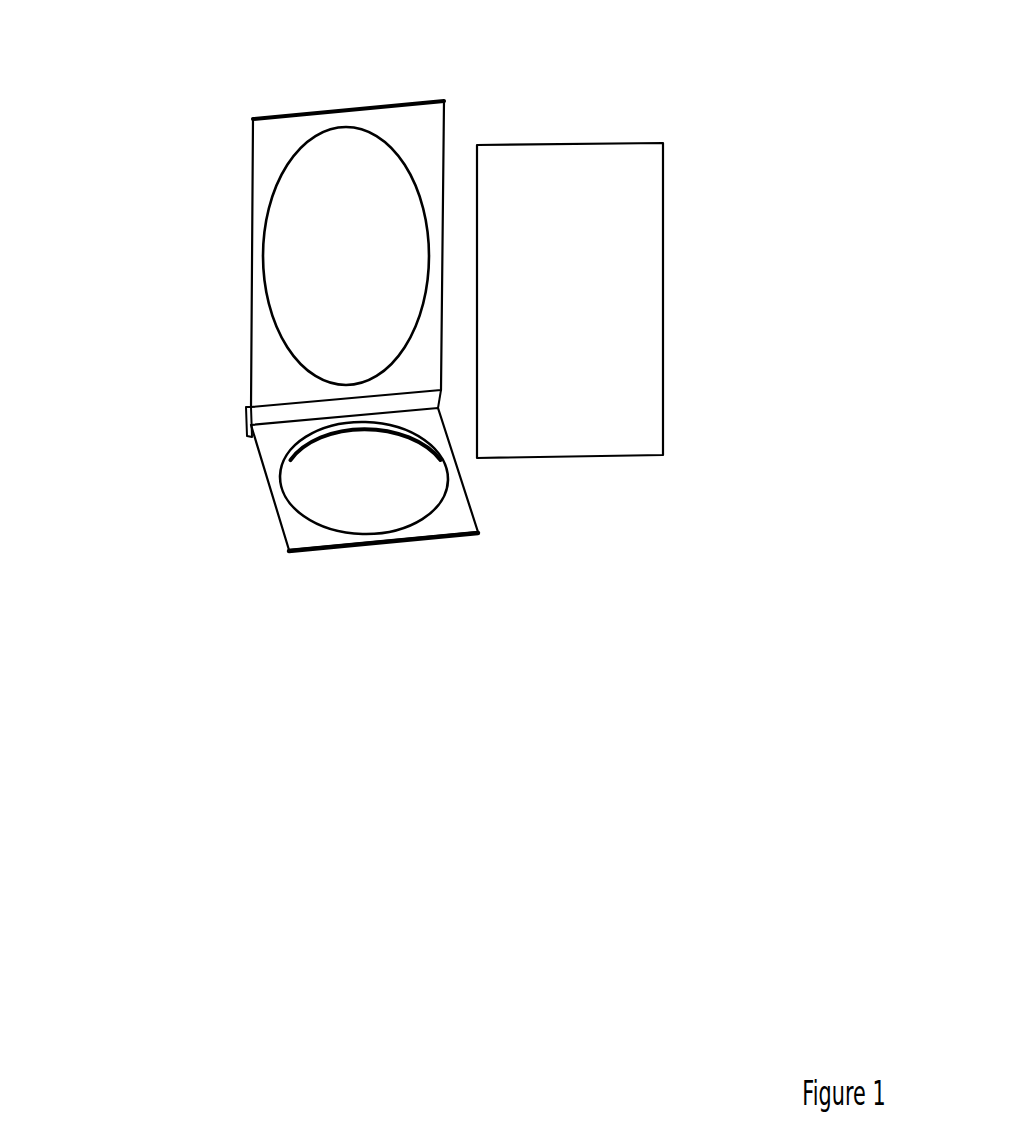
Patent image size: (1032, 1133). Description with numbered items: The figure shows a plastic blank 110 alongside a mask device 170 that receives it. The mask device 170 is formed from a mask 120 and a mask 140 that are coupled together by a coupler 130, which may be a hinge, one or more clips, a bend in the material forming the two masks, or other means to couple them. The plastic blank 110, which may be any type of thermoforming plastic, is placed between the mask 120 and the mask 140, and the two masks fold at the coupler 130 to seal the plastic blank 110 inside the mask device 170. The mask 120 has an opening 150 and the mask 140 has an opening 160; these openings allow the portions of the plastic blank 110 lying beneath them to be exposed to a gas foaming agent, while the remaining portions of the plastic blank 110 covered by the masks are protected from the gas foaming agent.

The plastic blank 110 is at (700, 300).
The mask 120 is at (325, 203).
The coupler 130 is at (168, 471).
The mask 140 is at (442, 535).
The opening 150 is at (252, 256).
The opening 160 is at (378, 550).
The mask device 170 is at (328, 340).